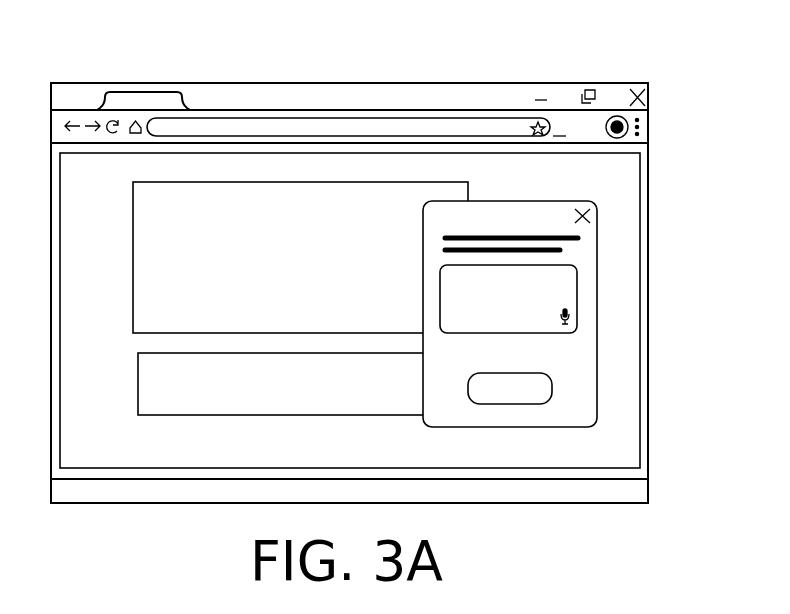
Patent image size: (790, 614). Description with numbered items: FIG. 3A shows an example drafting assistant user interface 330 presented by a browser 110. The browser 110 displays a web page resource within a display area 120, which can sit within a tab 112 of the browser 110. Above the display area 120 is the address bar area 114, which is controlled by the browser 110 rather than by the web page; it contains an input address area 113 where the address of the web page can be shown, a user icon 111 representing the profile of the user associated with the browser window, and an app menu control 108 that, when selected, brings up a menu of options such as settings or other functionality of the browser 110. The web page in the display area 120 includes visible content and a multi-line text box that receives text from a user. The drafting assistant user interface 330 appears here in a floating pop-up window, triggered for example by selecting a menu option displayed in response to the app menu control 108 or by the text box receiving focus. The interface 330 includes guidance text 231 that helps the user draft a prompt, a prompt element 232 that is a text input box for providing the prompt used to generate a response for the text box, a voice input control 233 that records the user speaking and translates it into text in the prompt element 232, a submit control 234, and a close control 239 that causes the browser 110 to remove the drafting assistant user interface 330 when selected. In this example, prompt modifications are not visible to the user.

The app menu control 108 is at (642, 127).
The browser 110 is at (414, 83).
The user icon 111 is at (618, 116).
The tab 112 is at (155, 95).
The input address area 113 is at (212, 127).
The address bar area 114 is at (562, 130).
The display area 120 is at (303, 152).
The guidance text 231 is at (582, 242).
The prompt element 232 is at (567, 299).
The voice input control 233 is at (578, 316).
The submit control 234 is at (557, 390).
The close control 239 is at (596, 215).
The drafting assistant user interface 330 is at (568, 304).